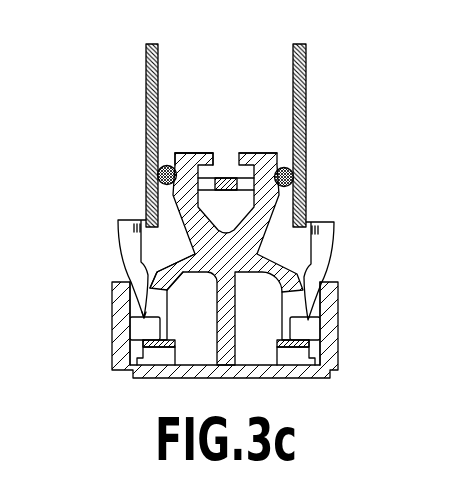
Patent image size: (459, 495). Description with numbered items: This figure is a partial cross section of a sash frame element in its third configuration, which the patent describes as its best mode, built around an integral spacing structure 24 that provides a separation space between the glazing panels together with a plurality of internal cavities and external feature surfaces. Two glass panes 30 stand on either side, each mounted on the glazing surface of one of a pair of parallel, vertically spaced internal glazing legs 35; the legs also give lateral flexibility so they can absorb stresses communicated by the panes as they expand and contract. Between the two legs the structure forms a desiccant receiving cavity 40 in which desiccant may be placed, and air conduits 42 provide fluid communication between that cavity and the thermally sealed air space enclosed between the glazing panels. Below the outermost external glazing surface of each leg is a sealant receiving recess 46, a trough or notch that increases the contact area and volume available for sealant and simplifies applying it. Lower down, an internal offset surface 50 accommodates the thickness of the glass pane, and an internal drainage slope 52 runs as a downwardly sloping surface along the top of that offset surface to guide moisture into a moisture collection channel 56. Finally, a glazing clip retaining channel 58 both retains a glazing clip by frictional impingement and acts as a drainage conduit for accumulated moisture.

The integral spacing structure 24 is at (275, 127).
The glass pane 30 is at (146, 79).
The internal glazing leg 35 is at (255, 155).
The desiccant receiving cavity 40 is at (243, 203).
The air conduit 42 is at (245, 178).
The sealant receiving recess 46 is at (183, 153).
The internal offset surface 50 is at (118, 218).
The internal drainage slope 52 is at (152, 278).
The moisture collection channel 56 is at (148, 320).
The glazing clip retaining channel 58 is at (130, 320).